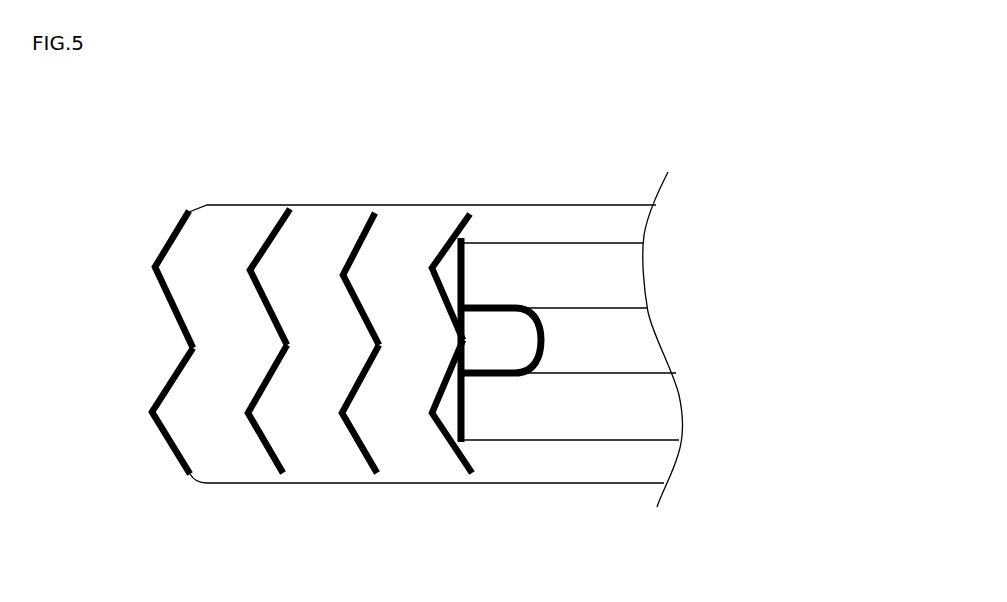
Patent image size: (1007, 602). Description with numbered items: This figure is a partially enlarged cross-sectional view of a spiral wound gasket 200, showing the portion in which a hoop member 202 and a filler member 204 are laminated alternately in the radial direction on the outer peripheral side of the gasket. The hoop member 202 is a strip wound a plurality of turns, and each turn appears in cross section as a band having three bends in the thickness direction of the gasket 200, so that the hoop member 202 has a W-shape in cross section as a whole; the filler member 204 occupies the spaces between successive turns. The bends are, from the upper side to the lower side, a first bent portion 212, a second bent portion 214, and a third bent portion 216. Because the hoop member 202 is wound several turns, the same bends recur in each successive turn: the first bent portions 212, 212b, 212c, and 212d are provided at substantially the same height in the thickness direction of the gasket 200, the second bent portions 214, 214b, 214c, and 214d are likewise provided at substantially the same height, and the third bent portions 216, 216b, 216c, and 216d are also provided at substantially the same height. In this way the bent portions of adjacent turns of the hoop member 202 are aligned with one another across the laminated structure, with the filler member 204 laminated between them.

The spiral wound gasket 200 is at (620, 181).
The hoop member 202 is at (178, 300).
The filler member 204 is at (238, 216).
The first bent portion 212 is at (160, 272).
The first bent portion 212b is at (250, 268).
The first bent portion 212c is at (343, 280).
The first bent portion 212d is at (433, 268).
The second bent portion 214 is at (167, 327).
The second bent portion 214b is at (287, 343).
The second bent portion 214c is at (380, 343).
The second bent portion 214d is at (463, 343).
The third bent portion 216 is at (163, 395).
The third bent portion 216b is at (250, 407).
The third bent portion 216c is at (343, 413).
The third bent portion 216d is at (432, 413).